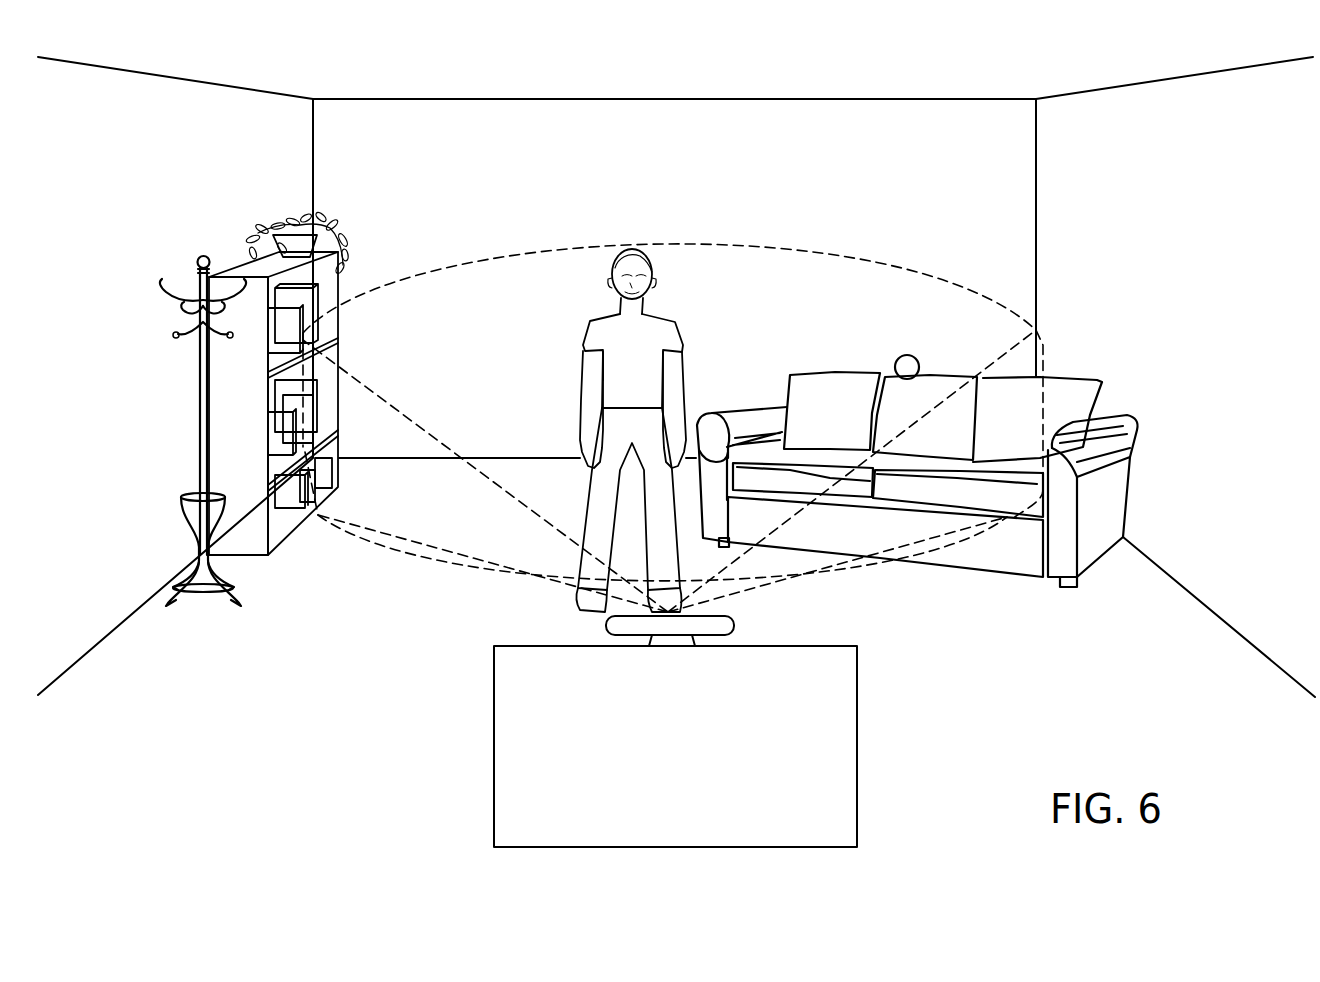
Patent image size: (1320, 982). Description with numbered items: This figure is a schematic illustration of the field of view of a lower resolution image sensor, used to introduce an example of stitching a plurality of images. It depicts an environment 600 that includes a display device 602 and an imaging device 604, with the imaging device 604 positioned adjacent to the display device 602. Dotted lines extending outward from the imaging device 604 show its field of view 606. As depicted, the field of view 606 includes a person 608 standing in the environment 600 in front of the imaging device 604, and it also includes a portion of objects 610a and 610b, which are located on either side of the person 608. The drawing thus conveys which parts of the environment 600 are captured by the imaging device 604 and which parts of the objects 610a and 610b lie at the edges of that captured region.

The environment 600 is at (879, 109).
The display device 602 is at (858, 646).
The imaging device 604 is at (728, 618).
The field of view 606 is at (808, 252).
The person 608 is at (664, 305).
The object 610a is at (849, 346).
The object 610b is at (239, 189).